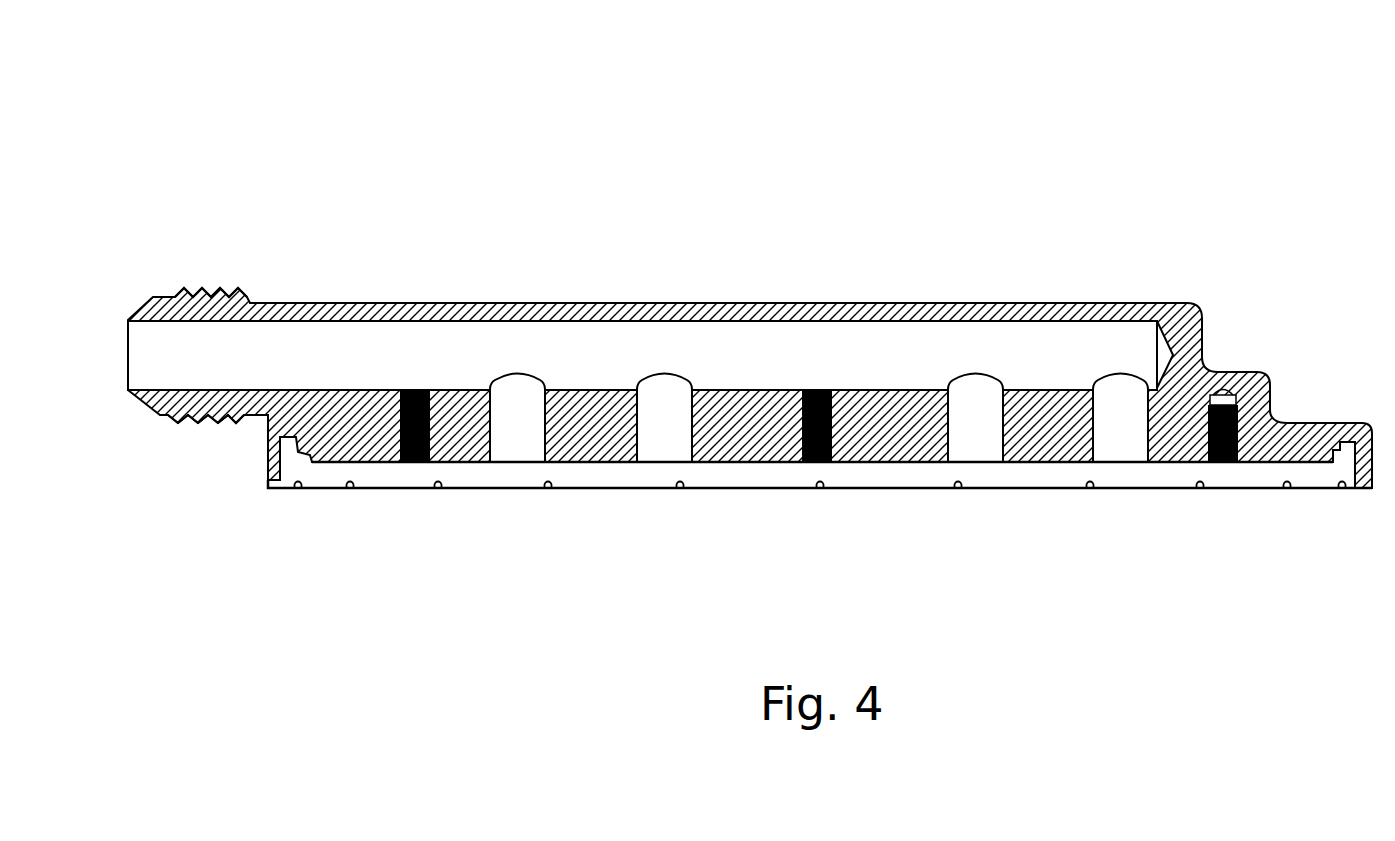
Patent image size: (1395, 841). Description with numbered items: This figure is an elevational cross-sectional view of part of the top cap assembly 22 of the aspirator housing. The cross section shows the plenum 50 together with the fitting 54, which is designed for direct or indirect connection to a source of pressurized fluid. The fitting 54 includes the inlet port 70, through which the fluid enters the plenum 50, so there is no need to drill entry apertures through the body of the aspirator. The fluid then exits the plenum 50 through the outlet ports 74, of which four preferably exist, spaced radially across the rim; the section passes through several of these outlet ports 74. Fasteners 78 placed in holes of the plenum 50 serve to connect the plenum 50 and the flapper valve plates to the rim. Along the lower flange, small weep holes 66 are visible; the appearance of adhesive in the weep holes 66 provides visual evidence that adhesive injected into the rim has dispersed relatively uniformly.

The top cap assembly 22 is at (718, 334).
The plenum 50 is at (560, 303).
The fitting 54 is at (197, 290).
The weep holes 66 is at (550, 490).
The inlet port 70 is at (138, 363).
The outlet ports 74 is at (535, 383).
The fasteners 78 is at (418, 462).